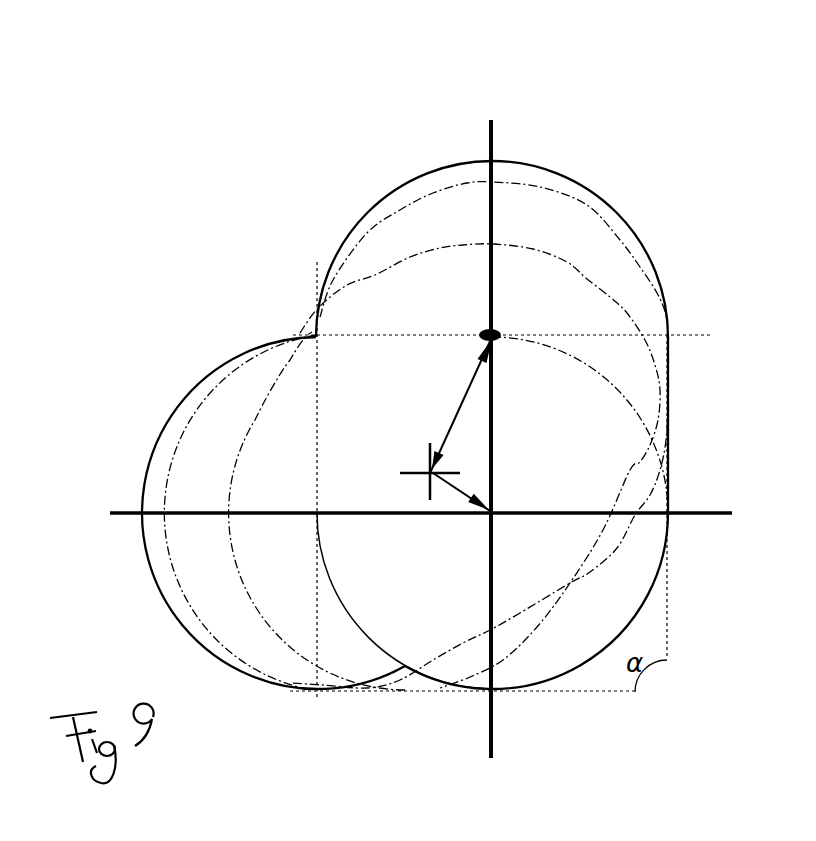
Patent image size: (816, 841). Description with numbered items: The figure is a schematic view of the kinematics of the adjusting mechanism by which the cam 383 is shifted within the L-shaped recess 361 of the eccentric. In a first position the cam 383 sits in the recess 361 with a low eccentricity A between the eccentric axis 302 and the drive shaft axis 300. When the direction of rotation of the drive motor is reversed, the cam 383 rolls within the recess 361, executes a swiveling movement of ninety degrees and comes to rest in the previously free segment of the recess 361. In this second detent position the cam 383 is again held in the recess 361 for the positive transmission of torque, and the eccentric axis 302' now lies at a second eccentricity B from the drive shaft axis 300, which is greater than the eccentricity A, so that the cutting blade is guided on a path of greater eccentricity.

The drive shaft axis 300 is at (428, 467).
The eccentric axis 302 is at (405, 575).
The eccentric axis 302' is at (449, 421).
The recess 361 is at (423, 170).
The cam 383 is at (577, 270).
The first eccentricity A is at (462, 497).
The second eccentricity B is at (460, 405).